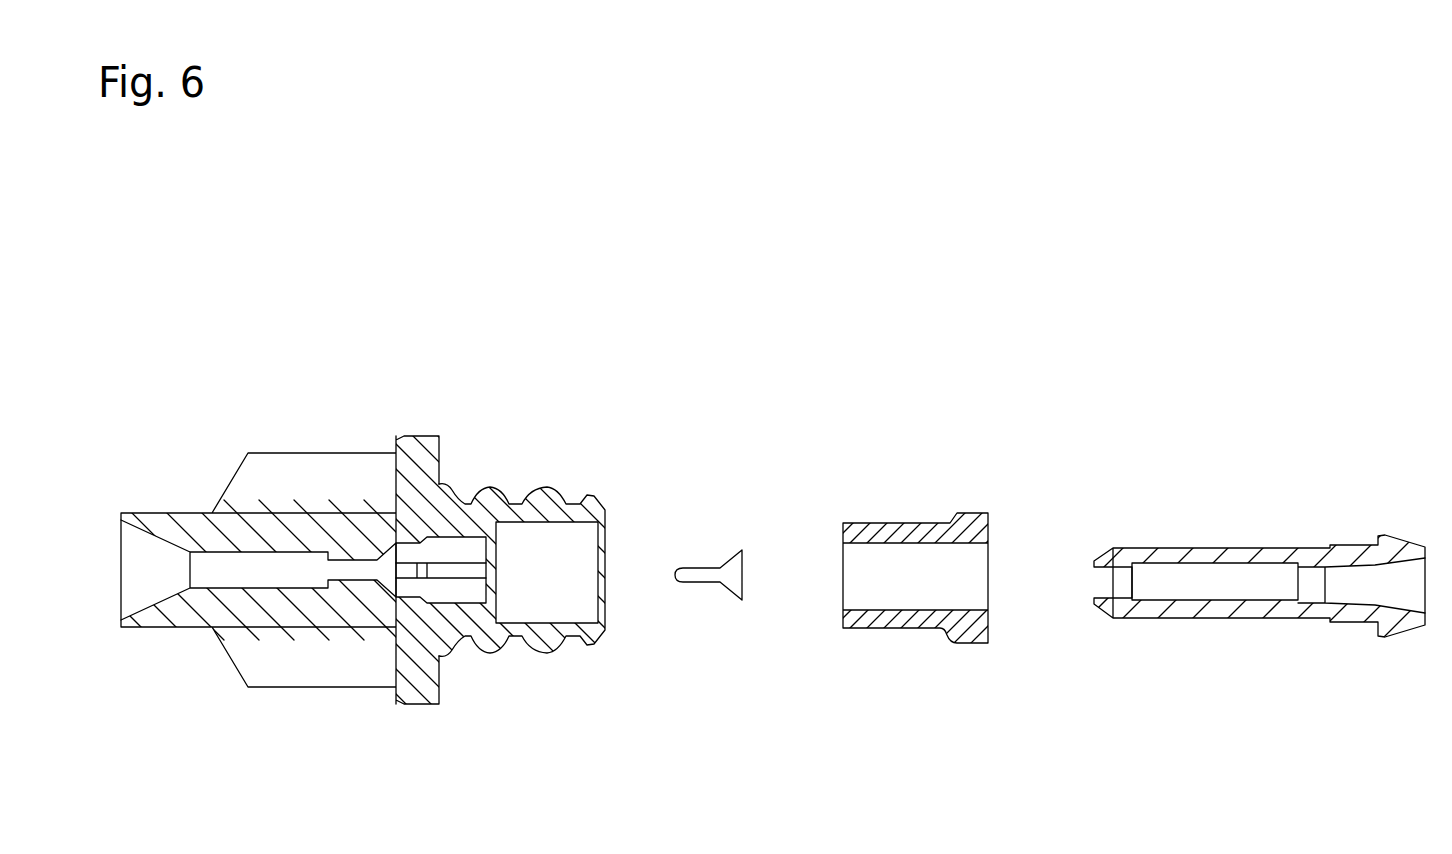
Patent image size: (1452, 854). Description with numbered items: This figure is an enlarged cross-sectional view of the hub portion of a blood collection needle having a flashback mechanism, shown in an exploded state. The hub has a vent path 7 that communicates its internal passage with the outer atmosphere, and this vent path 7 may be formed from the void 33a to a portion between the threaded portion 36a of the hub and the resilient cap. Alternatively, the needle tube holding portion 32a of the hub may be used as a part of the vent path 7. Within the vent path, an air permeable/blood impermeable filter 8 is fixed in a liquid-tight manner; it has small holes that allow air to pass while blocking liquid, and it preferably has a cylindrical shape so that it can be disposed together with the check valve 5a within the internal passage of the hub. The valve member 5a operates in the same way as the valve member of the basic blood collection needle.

The vent path 7 is at (505, 530).
The threaded portion 36a is at (562, 520).
The void 33a is at (432, 590).
The valve member 5a is at (730, 593).
The air permeable/blood impermeable filter 8 is at (900, 527).
The needle tube holding portion 32a is at (1190, 590).